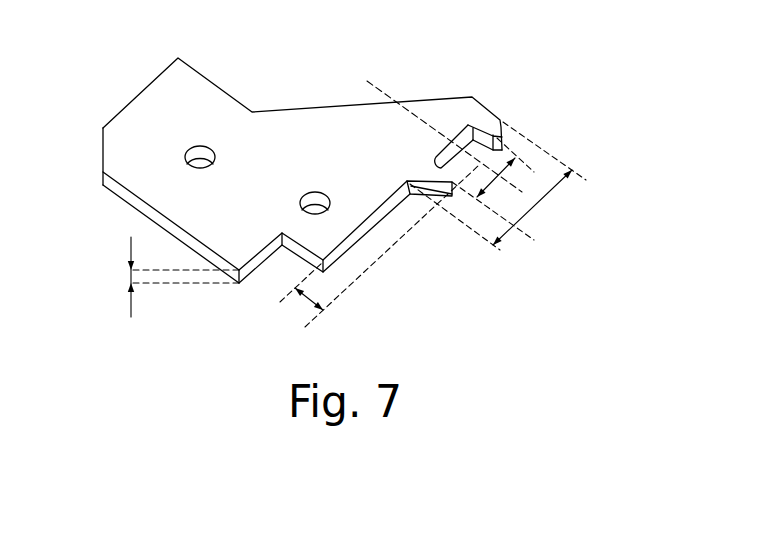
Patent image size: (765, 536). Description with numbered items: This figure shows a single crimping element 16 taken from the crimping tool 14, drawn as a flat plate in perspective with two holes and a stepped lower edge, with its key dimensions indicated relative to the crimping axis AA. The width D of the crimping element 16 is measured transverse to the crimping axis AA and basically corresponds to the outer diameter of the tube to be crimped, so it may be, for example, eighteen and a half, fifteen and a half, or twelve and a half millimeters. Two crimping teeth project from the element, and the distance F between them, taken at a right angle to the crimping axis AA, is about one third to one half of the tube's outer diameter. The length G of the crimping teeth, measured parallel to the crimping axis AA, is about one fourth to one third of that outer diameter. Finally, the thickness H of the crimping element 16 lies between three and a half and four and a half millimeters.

The crimping tool 14 is at (486, 84).
The crimping element 16 is at (344, 149).
The crimping axis AA is at (429, 119).
The thickness of the crimping element H is at (173, 277).
The distance between the crimping teeth F is at (493, 189).
The width of the crimping element D is at (498, 186).
The length of the crimping teeth G is at (379, 246).